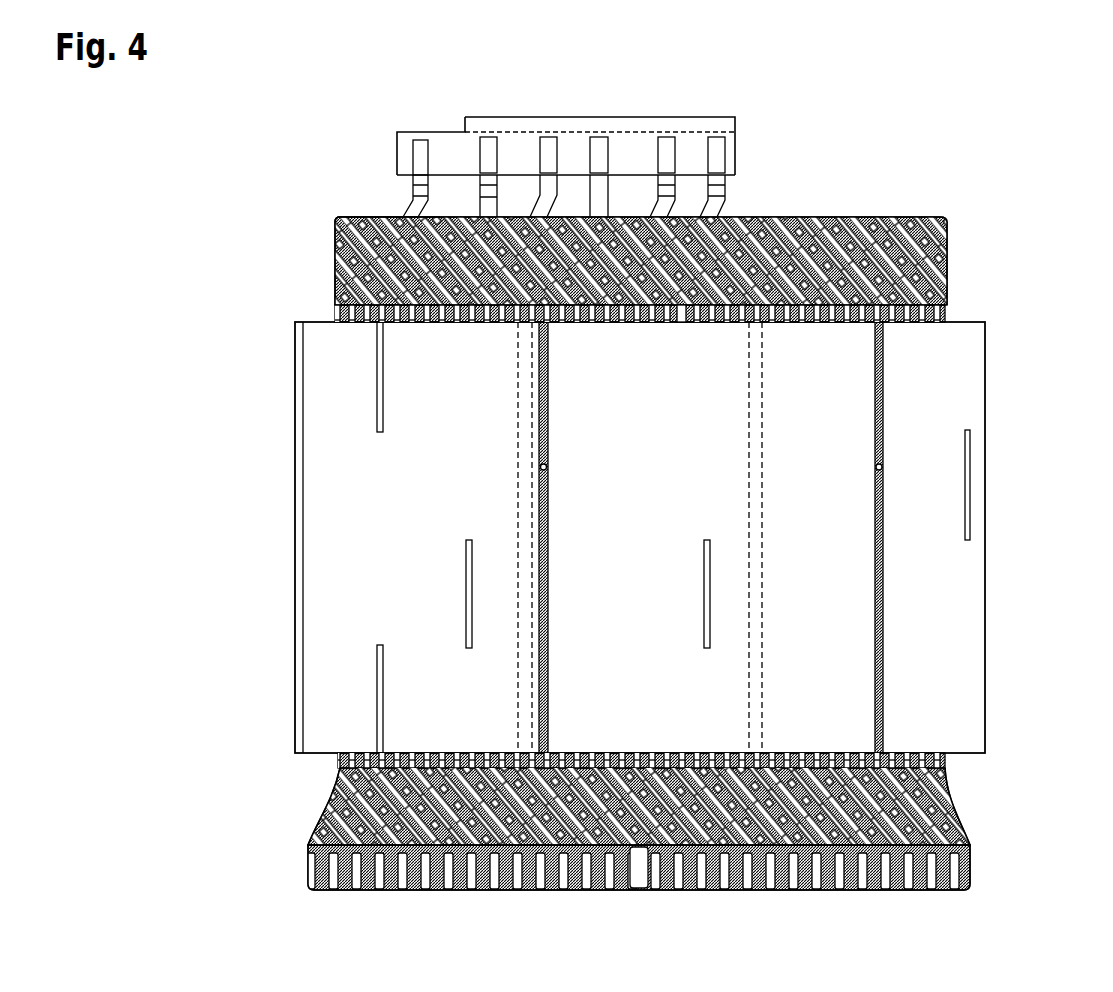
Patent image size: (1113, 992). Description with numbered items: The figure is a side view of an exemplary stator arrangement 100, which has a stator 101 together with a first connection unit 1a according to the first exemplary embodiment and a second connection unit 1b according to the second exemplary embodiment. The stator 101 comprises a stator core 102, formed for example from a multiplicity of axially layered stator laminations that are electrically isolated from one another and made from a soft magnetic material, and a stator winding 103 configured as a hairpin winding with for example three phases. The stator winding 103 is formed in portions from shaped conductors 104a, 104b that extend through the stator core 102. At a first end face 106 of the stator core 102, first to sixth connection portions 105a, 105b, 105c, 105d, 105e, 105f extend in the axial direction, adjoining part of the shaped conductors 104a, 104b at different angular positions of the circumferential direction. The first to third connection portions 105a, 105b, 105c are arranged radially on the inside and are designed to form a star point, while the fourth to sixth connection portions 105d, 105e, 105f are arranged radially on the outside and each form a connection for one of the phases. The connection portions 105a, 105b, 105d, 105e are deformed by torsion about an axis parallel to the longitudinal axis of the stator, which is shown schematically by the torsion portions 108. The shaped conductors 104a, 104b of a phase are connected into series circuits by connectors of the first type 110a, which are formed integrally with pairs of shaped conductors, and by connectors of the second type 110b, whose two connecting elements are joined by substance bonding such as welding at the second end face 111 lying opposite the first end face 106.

The stator arrangement 100 is at (1007, 167).
The stator 101 is at (980, 278).
The stator core 102 is at (985, 382).
The stator winding 103 is at (337, 230).
The shaped conductor 104a is at (518, 488).
The shaped conductor 104b is at (750, 438).
The first connection portion 105a is at (648, 177).
The second connection portion 105b is at (413, 177).
The third connection portion 105c is at (530, 175).
The fourth connection portion 105d is at (725, 183).
The fifth connection portion 105e is at (477, 170).
The sixth connection portion 105f is at (588, 183).
The first end face 106 is at (320, 317).
The torsion portion 108 is at (417, 195).
The connector of the first type 110a is at (681, 322).
The connector of the second type 110b is at (653, 843).
The second end face 111 is at (322, 775).
The first connection unit 1a is at (400, 130).
The second connection unit 1b is at (727, 117).